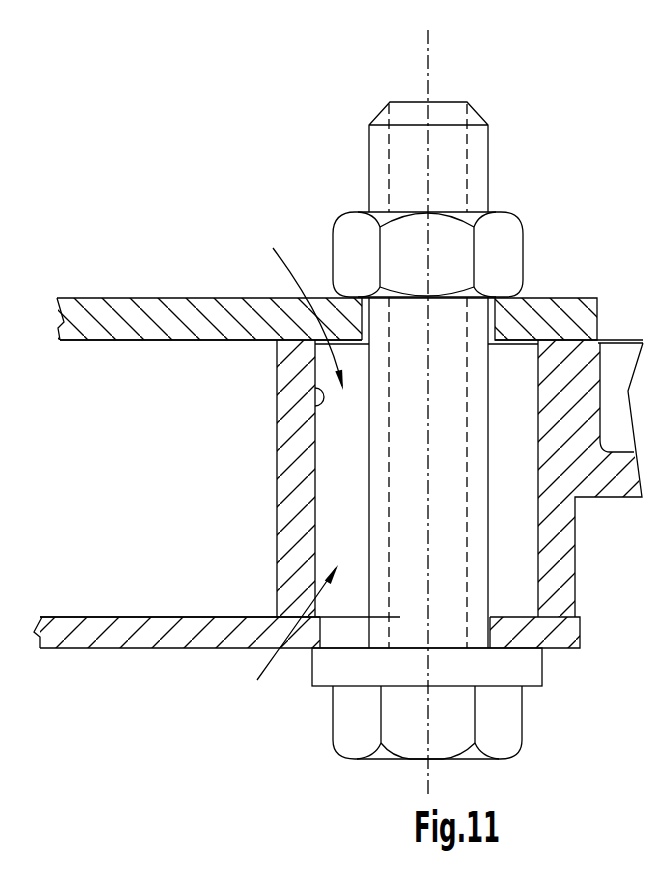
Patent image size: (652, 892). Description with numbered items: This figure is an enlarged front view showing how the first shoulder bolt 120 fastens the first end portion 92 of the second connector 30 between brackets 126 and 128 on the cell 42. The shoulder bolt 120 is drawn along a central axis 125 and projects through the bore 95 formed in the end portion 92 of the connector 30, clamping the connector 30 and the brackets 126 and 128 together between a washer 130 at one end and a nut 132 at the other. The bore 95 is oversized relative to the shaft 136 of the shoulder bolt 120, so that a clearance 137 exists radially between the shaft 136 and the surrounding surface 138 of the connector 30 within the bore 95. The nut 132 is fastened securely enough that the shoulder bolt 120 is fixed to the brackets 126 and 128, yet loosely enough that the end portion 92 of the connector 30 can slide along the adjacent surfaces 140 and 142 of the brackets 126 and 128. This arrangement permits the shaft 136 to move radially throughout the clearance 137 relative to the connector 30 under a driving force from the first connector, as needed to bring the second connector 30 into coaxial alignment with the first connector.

The central axis 125 is at (427, 73).
The nut 132 is at (333, 240).
The cell 42 is at (322, 304).
The bracket 126 is at (112, 318).
The clearance 137 is at (296, 306).
The adjacent surface 140 is at (155, 340).
The surrounding surface 138 is at (305, 393).
The end portion 92 is at (277, 438).
The second connector 30 is at (407, 478).
The shaft 136 is at (368, 520).
The adjacent surface 142 is at (97, 615).
The bracket 128 is at (307, 617).
The bore 95 is at (281, 631).
The washer 130 is at (312, 672).
The first shoulder bolt 120 is at (397, 760).